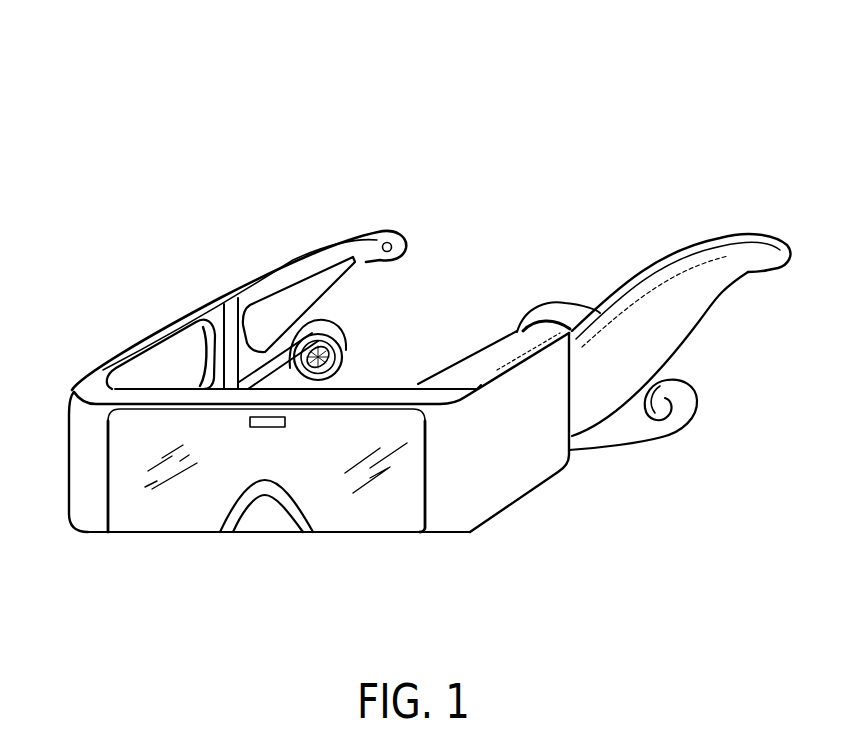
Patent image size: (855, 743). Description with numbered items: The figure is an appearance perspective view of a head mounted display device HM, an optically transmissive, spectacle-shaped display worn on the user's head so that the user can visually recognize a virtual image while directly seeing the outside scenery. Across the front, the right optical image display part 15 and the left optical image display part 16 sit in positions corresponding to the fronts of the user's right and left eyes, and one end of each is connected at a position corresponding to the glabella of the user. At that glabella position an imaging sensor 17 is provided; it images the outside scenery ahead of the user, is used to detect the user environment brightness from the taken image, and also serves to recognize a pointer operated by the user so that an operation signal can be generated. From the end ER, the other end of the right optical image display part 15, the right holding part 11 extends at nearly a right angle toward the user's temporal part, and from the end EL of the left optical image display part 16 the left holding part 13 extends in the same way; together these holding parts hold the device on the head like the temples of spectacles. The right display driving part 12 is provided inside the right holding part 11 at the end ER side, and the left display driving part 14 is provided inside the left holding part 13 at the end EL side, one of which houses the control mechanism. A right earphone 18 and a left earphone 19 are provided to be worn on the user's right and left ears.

The head mounted display device HM is at (653, 97).
The right holding part 11 is at (318, 228).
The right display driving part 12 is at (157, 362).
The left holding part 13 is at (714, 224).
The left display driving part 14 is at (488, 360).
The right optical image display part 15 is at (163, 512).
The left optical image display part 16 is at (362, 512).
The imaging sensor 17 is at (268, 430).
The right earphone 18 is at (345, 345).
The left earphone 19 is at (700, 403).
The end ER is at (87, 512).
The end EL is at (443, 512).